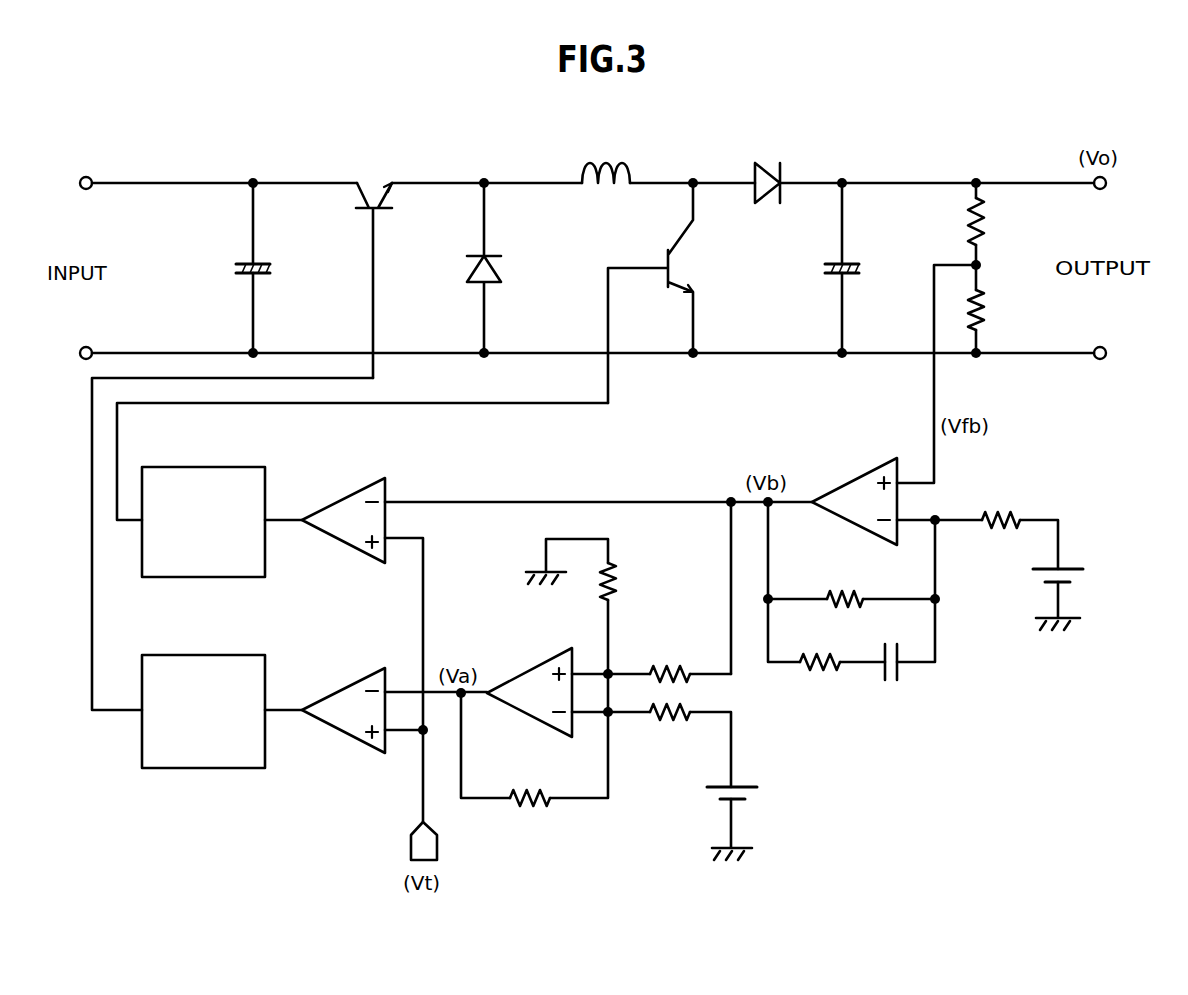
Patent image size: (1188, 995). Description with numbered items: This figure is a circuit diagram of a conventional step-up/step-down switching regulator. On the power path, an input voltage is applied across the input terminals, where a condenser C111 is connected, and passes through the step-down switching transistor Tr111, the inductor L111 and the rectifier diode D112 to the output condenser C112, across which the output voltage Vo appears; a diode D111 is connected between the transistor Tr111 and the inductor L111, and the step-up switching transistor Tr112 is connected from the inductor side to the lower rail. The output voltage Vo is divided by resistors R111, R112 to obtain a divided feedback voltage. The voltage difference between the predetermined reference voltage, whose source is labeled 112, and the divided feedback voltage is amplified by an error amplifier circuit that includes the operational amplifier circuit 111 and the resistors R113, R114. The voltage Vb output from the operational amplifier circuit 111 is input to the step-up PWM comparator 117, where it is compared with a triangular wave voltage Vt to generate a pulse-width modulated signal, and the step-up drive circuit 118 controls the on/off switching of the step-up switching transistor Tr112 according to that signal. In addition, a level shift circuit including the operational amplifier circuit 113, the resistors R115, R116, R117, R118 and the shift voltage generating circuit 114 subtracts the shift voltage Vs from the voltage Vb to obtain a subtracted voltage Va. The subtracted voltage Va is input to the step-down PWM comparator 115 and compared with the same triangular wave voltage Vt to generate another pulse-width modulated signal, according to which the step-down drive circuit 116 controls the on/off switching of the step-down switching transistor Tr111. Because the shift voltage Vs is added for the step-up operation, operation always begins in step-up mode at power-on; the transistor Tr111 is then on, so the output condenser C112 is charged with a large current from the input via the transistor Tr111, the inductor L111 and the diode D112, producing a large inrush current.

The operational amplifier circuit 111 is at (842, 479).
The reference voltage source Vref 112 is at (1083, 579).
The operational amplifier circuit 113 is at (527, 664).
The shift voltage generating circuit 114 is at (751, 798).
The step-down PWM comparator 115 is at (333, 689).
The step-down drive circuit 116 is at (167, 654).
The step-up PWM comparator 117 is at (332, 499).
The step-up drive circuit 118 is at (169, 466).
The step-down switching transistor Tr111 is at (369, 265).
The step-up switching transistor Tr112 is at (681, 293).
The input capacitor C111 is at (275, 268).
The output condenser C112 is at (862, 268).
The diode D111 is at (515, 268).
The rectifier diode D112 is at (767, 170).
The inductor L111 is at (604, 159).
The resistor R111 is at (1007, 224).
The resistor R112 is at (1007, 309).
The resistor R113 is at (1001, 504).
The resistor R114 is at (844, 584).
The resistor R115 is at (671, 658).
The resistor R116 is at (638, 581).
The resistor R117 is at (671, 729).
The resistor R118 is at (528, 782).